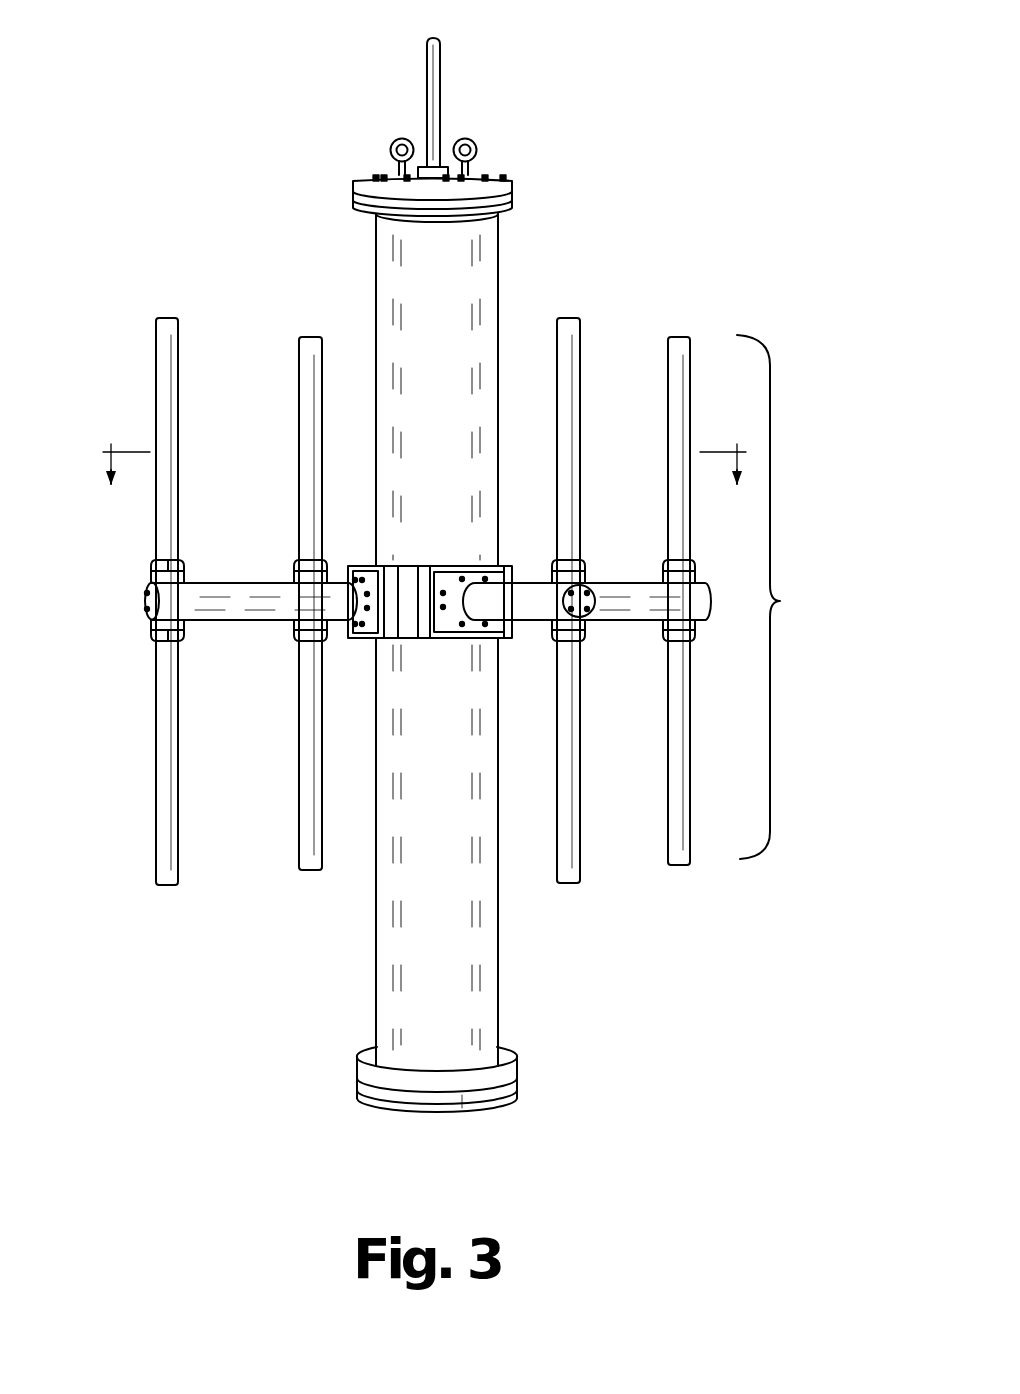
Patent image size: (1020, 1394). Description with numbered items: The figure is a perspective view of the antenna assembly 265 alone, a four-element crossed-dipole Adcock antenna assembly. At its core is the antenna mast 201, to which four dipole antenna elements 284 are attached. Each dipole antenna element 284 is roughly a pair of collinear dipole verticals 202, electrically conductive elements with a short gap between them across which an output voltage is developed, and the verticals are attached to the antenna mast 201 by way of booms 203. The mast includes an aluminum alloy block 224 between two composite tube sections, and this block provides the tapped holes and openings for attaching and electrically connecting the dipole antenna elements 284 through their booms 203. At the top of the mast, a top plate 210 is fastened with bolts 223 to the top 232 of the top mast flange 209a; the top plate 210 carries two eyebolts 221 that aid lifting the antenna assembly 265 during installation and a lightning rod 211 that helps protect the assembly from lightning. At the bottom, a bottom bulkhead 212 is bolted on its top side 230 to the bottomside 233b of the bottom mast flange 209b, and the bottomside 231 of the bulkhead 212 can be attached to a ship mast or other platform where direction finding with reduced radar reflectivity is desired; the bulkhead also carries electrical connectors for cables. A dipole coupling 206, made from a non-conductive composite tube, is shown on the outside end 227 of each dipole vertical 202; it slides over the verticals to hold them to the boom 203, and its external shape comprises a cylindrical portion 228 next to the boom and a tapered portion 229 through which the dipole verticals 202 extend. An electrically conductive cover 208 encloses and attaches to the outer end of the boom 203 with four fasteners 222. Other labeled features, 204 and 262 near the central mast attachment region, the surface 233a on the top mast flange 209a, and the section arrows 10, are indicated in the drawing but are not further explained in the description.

The antenna assembly 265 is at (770, 227).
The antenna mast 201 is at (383, 323).
The top plate 210 is at (515, 201).
The top flange lower ring 233a is at (501, 219).
The top mast flange 209a is at (517, 205).
The bolts 223 is at (376, 179).
The lightning rod 211 is at (427, 97).
The top of the top mast flange 232 is at (393, 148).
The eyebolts 221 is at (478, 140).
The left clamp plate 204 is at (365, 575).
The aluminum alloy block 224 is at (411, 571).
The right clamp plate 262 is at (363, 639).
The boom 203 is at (226, 621).
The dipole verticals 202 is at (160, 392).
The outside end 227 is at (163, 316).
The cover 208 is at (164, 600).
The fasteners 222 is at (145, 611).
The cylindrical portion 228 is at (148, 627).
The dipole coupling 206 is at (145, 636).
The tapered portion 229 is at (153, 644).
The dipole antenna elements 284 is at (695, 600).
The section line 10 is at (421, 481).
The bottom mast flange 209b is at (353, 1065).
The bottom bulkhead 212 is at (518, 1083).
The bottomside of the bottom mast flange 233b is at (393, 1098).
The bottomside of the bulkhead 231 is at (442, 1110).
The top side of the bottom bulkhead 230 is at (468, 1101).